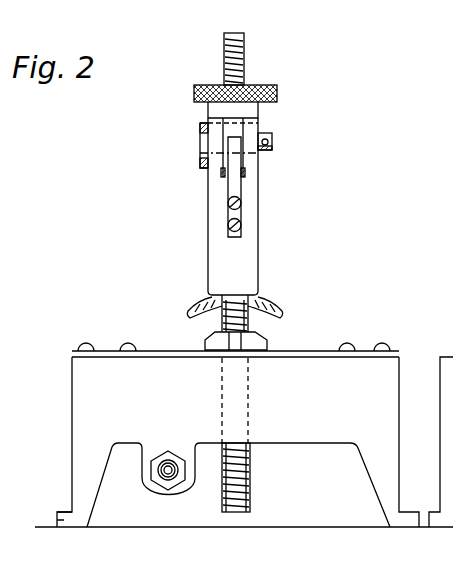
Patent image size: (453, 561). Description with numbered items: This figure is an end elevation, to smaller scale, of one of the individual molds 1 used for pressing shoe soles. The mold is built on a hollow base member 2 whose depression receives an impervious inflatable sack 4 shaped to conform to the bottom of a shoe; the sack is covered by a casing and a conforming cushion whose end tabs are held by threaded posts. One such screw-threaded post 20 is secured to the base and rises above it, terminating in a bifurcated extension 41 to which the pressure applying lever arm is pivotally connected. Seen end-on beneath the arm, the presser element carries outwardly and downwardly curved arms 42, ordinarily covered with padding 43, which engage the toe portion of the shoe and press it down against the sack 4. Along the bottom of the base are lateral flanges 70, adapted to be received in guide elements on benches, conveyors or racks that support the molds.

The mold 1 is at (182, 23).
The hollow base member 2 is at (74, 440).
The inflatable sack 4 is at (45, 361).
The screw-threaded post 20 is at (263, 325).
The bifurcated extension 41 is at (258, 207).
The outwardly and downwardly curved arms 42 is at (281, 297).
The padding 43 is at (192, 305).
The lateral flanges 70 is at (64, 520).